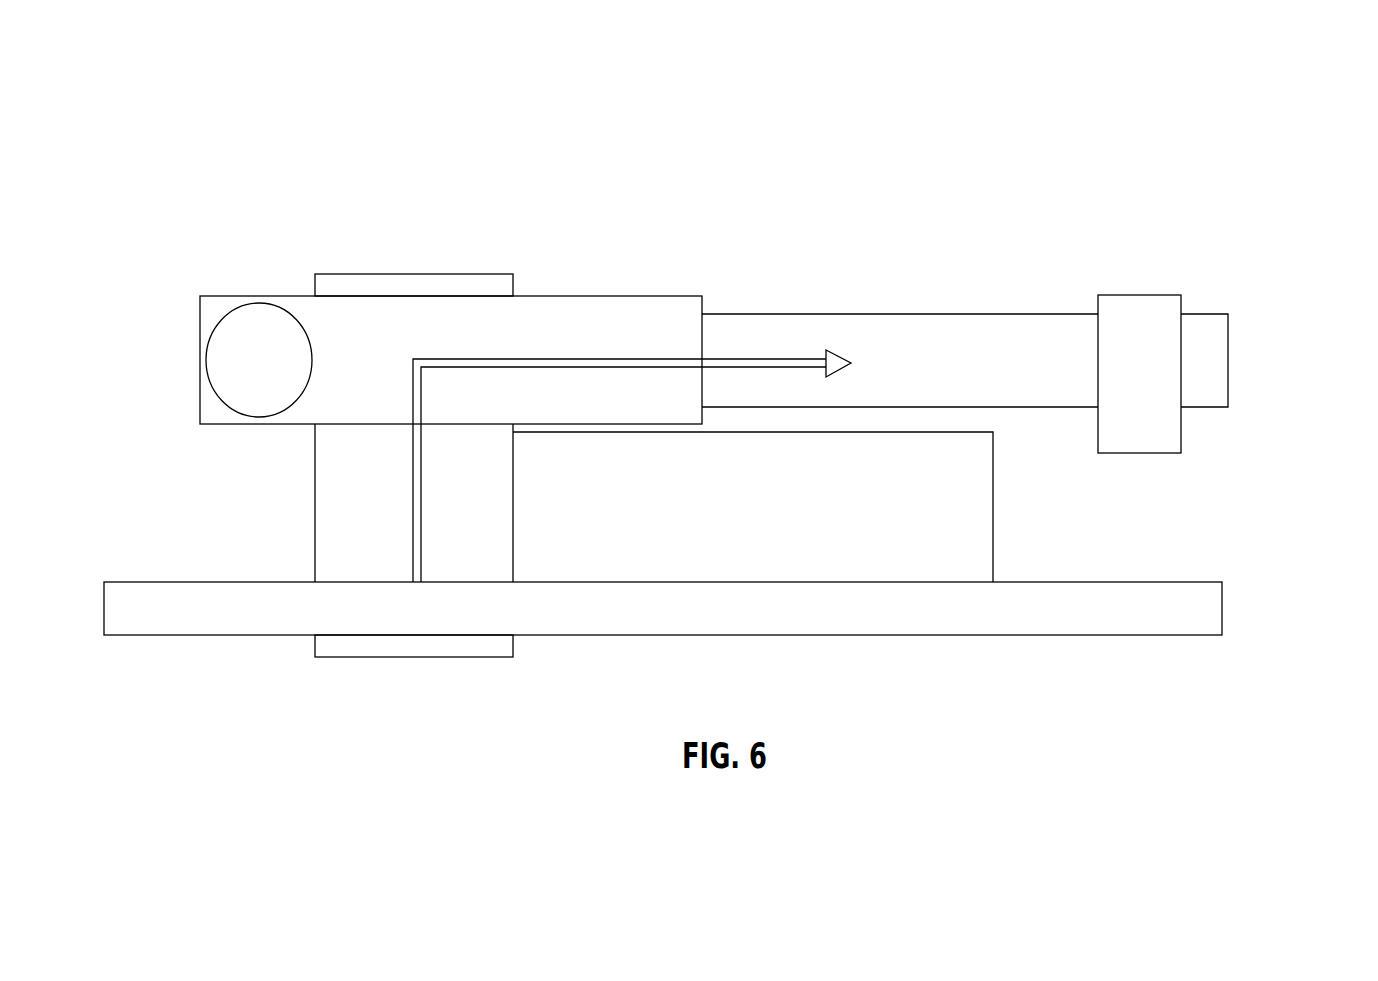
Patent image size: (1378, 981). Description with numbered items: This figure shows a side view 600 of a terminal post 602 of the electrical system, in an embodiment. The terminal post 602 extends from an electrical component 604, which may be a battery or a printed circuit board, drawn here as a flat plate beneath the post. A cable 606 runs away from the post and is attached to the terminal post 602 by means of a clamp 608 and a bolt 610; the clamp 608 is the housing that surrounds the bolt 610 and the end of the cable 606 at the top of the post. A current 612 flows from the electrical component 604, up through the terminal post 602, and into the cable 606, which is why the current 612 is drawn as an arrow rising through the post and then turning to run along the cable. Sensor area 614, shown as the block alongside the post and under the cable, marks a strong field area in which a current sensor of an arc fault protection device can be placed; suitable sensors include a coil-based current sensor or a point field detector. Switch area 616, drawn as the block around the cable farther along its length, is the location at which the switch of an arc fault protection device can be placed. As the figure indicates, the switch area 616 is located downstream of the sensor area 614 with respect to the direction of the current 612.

The side view 600 is at (1218, 106).
The terminal post 602 is at (315, 470).
The electrical component 604 is at (138, 580).
The cable 606 is at (1230, 365).
The clamp 608 is at (587, 296).
The bolt 610 is at (235, 333).
The current 612 is at (416, 360).
The sensor area 614 is at (857, 432).
The switch area 616 is at (1133, 295).